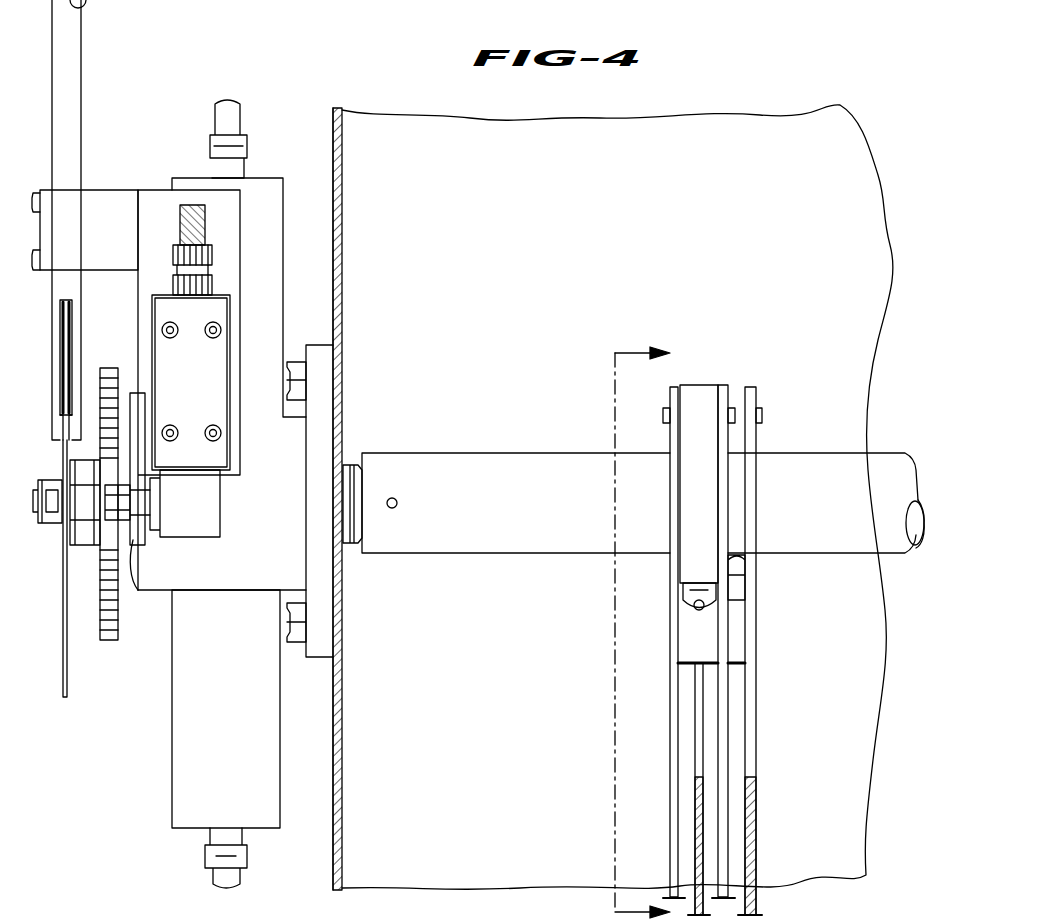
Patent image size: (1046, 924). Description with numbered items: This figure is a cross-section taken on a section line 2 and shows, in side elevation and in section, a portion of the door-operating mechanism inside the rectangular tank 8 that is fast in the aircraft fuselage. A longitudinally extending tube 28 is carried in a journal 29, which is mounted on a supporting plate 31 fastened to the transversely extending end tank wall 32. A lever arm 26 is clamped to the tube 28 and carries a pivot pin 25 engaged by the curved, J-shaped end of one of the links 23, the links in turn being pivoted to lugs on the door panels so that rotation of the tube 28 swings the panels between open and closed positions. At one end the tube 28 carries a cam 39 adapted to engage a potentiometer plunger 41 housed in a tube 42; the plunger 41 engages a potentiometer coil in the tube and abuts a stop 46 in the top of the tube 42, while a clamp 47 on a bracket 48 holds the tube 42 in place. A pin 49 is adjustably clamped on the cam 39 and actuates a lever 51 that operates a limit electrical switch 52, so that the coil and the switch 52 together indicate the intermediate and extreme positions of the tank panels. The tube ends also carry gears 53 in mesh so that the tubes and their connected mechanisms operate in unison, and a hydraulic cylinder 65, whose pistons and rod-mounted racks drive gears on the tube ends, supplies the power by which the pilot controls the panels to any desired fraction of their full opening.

The section line 2- 2 is at (642, 617).
The tank 8 is at (434, 142).
The links 23 is at (697, 718).
The pivot pin 25 is at (664, 416).
The lever arm 26 is at (706, 396).
The tube 28 is at (527, 548).
The journal 29 is at (344, 466).
The supporting plate 31 is at (318, 660).
The end tank wall 32 is at (343, 816).
The cam 39 is at (62, 700).
The potentiometer plunger 41 is at (70, 358).
The tube 42 is at (81, 152).
The stop 46 is at (84, 8).
The clamp 47 is at (106, 197).
The bracket 48 is at (152, 192).
The pin 49 is at (78, 505).
The lever 51 is at (126, 556).
The limit electrical switch 52 is at (191, 382).
The gear 53 is at (110, 642).
The cylinder 65 is at (271, 186).